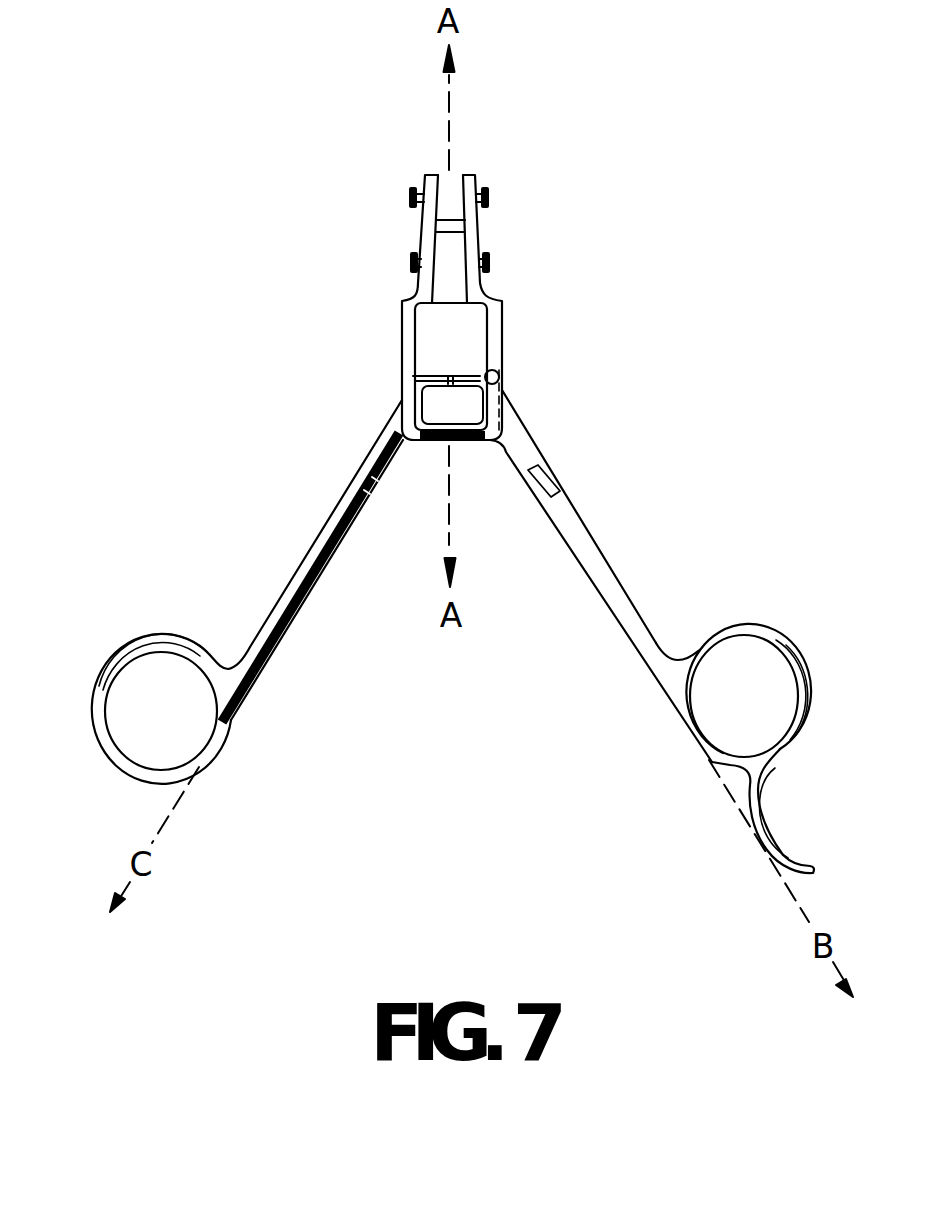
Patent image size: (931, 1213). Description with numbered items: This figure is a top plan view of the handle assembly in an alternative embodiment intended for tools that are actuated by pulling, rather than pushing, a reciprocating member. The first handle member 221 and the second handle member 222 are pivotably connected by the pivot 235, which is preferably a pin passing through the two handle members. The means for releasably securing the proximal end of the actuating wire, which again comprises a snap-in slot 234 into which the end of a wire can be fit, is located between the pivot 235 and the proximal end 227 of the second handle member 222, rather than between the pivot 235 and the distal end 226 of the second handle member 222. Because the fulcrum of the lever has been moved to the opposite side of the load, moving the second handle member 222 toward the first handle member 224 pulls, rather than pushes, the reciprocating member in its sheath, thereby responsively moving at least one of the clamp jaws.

The first handle member 221 is at (652, 631).
The second handle member 222 is at (247, 592).
The first handle member 224 is at (598, 567).
The distal end of the second handle member 226 is at (467, 381).
The proximal end of second handle member 227 is at (292, 613).
The snap-in slot 234 is at (448, 378).
The pivot 235 is at (501, 376).